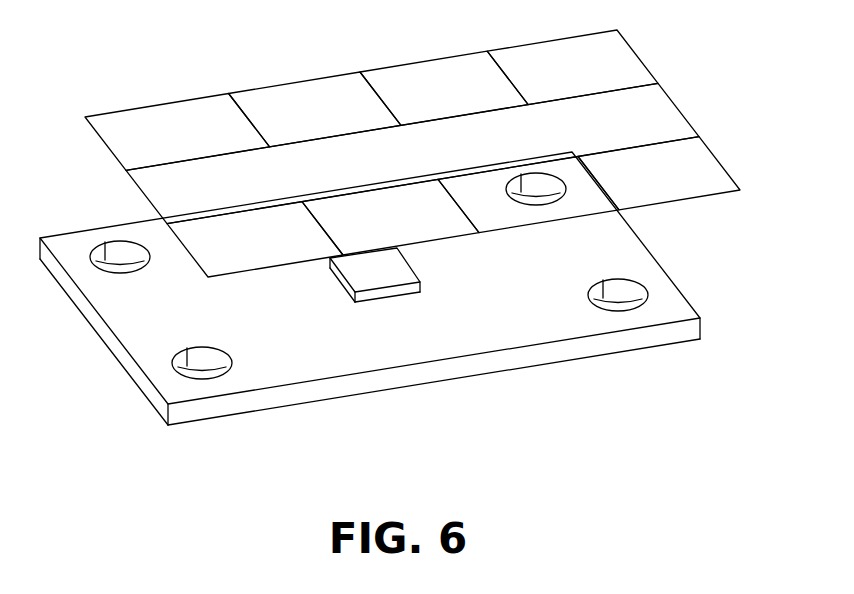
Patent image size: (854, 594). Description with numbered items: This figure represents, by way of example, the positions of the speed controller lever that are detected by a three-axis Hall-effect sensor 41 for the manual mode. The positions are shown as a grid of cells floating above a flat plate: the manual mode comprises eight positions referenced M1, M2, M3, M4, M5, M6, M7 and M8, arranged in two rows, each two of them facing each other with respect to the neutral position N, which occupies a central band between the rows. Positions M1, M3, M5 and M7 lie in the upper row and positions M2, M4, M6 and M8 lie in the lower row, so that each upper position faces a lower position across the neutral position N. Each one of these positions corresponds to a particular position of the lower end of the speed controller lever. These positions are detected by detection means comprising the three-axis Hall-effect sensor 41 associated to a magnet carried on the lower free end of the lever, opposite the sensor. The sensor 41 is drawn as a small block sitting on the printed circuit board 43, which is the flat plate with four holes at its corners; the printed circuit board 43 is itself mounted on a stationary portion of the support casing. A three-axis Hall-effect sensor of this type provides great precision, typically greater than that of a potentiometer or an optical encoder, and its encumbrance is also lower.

The three-axis Hall-effect sensor 41 is at (385, 273).
The printed circuit board 43 is at (317, 370).
The manual mode position M1 is at (177, 132).
The manual mode position M2 is at (255, 239).
The manual mode position M3 is at (315, 109).
The manual mode position M4 is at (390, 217).
The manual mode position M5 is at (444, 88).
The manual mode position M6 is at (528, 195).
The manual mode position M7 is at (572, 67).
The manual mode position M8 is at (659, 173).
The neutral position N is at (412, 153).